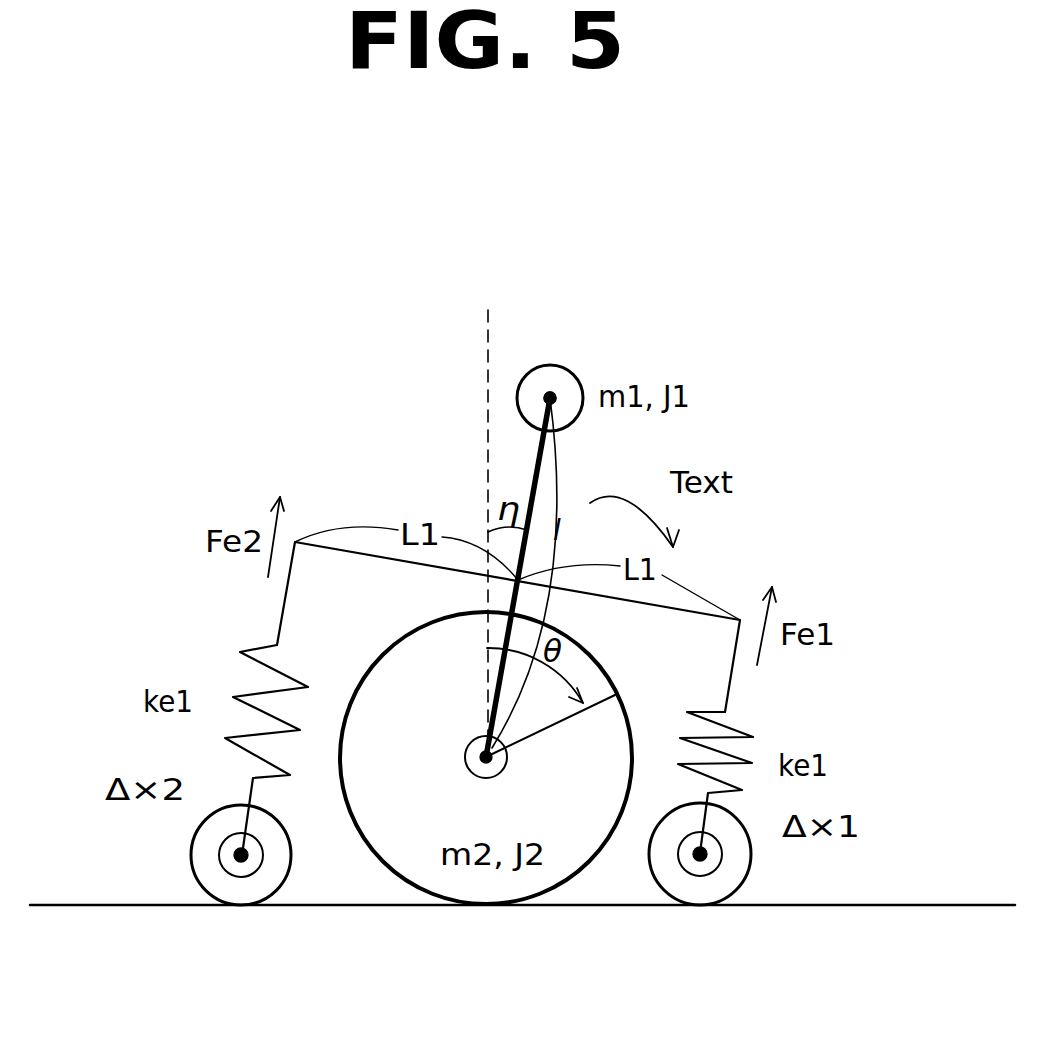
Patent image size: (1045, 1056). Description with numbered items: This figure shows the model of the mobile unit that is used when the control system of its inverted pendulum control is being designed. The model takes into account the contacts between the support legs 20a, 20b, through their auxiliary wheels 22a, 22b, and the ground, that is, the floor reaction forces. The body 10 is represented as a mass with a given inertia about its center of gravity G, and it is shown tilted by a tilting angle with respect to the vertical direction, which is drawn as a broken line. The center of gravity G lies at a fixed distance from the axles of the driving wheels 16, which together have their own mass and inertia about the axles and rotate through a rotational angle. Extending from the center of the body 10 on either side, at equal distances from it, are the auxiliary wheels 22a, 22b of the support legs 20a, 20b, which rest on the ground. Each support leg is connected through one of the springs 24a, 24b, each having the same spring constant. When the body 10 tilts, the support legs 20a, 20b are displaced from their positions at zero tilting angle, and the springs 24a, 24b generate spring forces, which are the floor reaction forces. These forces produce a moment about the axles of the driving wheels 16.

The body 10 is at (543, 377).
The center of gravity G is at (557, 392).
The driving wheels 16 is at (402, 847).
The support leg 20a is at (707, 818).
The support leg 20b is at (207, 827).
The auxiliary wheel 22a is at (697, 893).
The auxiliary wheel 22b is at (240, 895).
The spring 24a is at (737, 725).
The spring 24b is at (277, 645).